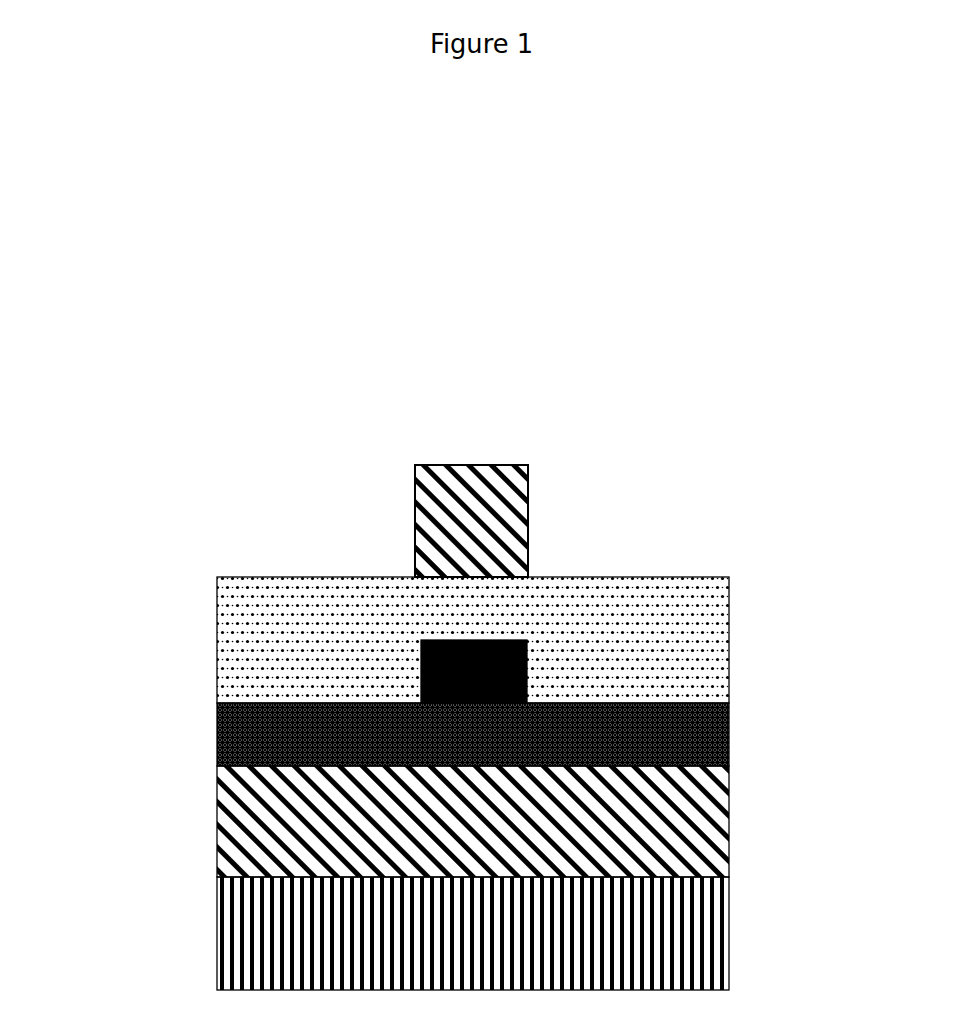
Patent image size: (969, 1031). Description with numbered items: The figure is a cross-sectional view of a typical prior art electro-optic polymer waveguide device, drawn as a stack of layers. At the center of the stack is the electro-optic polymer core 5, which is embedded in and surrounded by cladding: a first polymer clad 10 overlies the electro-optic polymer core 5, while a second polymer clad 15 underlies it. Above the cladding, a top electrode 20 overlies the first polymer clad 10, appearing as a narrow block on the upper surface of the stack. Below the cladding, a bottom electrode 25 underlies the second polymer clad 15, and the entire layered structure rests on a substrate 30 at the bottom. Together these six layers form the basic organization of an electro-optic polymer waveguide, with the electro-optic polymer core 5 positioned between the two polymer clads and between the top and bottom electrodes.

The electro-optic polymer core 5 is at (548, 672).
The first polymer clad 10 is at (196, 642).
The second polymer clad 15 is at (196, 737).
The top electrode 20 is at (393, 520).
The bottom electrode 25 is at (196, 823).
The substrate 30 is at (196, 933).